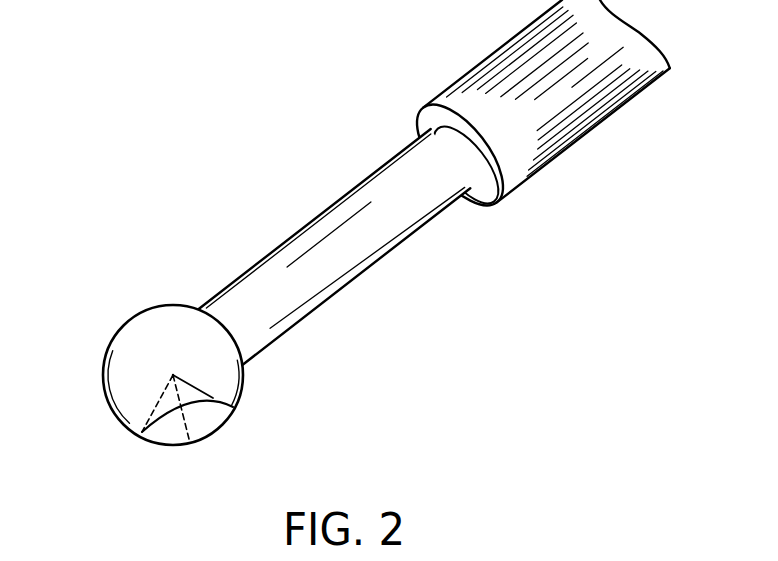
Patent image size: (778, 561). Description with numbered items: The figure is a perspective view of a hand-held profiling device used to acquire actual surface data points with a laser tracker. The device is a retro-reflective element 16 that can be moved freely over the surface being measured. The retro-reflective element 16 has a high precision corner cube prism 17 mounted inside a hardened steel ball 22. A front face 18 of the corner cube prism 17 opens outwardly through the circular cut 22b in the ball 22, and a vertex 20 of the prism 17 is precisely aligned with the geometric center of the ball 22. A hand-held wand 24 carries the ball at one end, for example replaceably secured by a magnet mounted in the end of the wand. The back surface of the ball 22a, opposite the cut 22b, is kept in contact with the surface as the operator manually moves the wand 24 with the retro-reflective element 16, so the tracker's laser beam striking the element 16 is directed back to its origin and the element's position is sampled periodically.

The retro-reflective element 16 is at (103, 392).
The corner cube prism 17 is at (212, 397).
The front face 18 is at (167, 434).
The vertex 20 is at (173, 375).
The hardened steel ball 22 is at (117, 386).
The back surface of the ball 22a is at (128, 316).
The circular cut 22b is at (218, 437).
The hand-held wand 24 is at (368, 148).